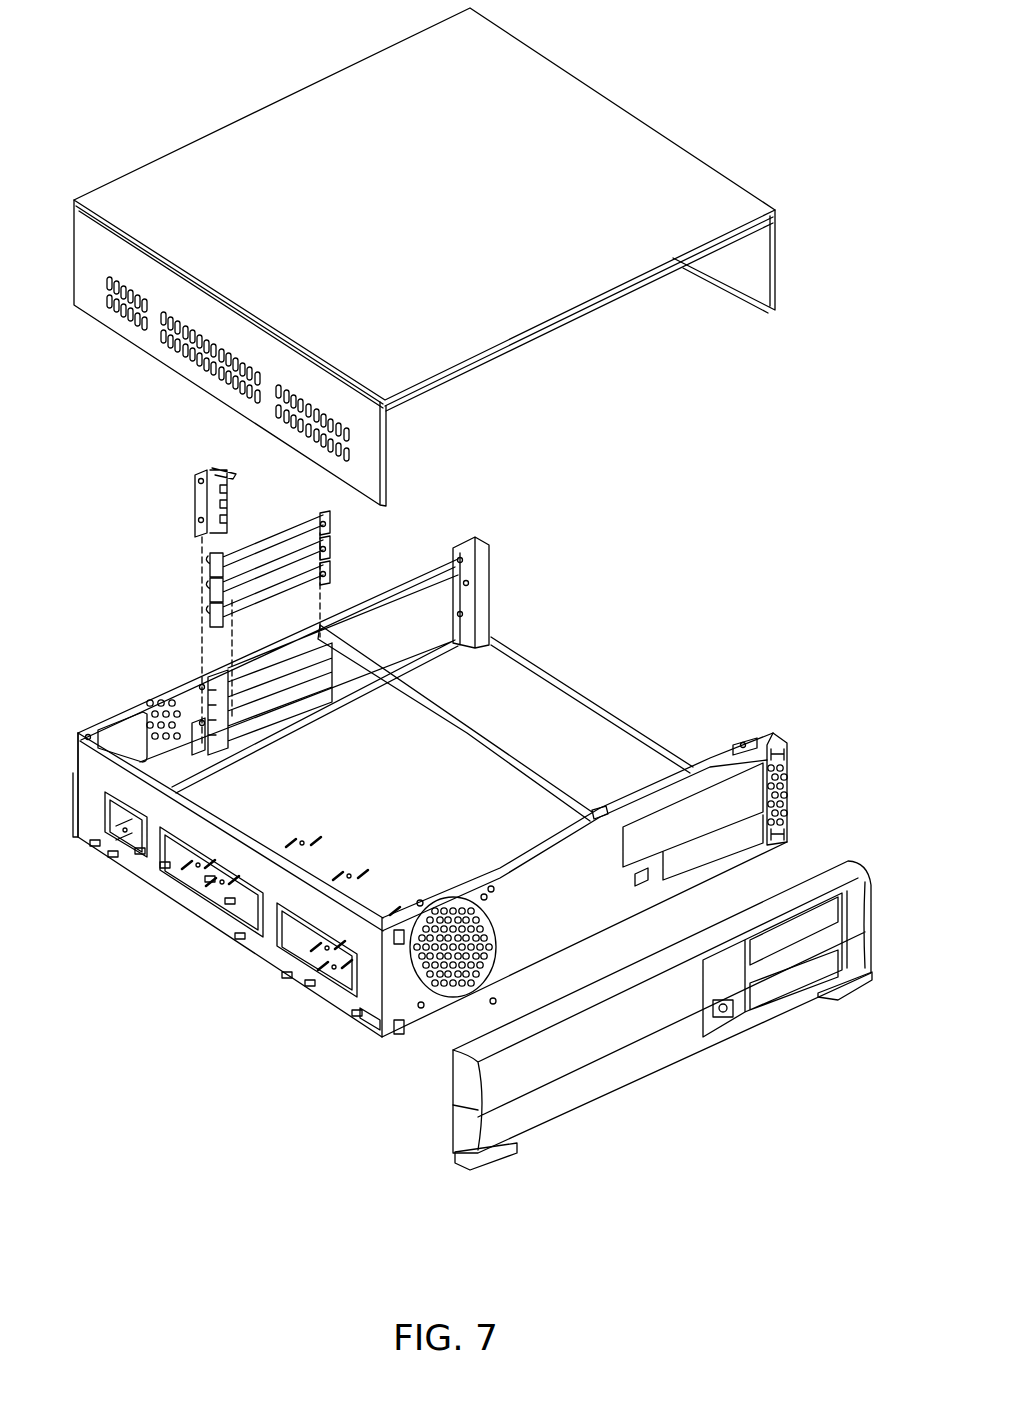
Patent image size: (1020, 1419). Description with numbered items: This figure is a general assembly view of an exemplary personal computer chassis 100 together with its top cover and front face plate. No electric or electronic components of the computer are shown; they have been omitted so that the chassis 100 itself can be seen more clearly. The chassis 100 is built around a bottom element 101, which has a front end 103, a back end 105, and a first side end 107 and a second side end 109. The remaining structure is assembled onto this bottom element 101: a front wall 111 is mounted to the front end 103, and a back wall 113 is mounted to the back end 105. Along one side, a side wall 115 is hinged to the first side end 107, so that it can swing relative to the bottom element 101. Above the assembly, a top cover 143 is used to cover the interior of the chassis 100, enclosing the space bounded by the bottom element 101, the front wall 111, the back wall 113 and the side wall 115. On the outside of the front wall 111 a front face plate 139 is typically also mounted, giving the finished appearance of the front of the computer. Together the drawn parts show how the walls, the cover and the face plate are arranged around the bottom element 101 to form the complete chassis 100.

The personal computer chassis 100 is at (691, 604).
The bottom element 101 is at (570, 718).
The front end 103 is at (432, 1015).
The back end 105 is at (440, 660).
The first side end 107 is at (209, 941).
The second side end 109 is at (640, 742).
The front wall 111 is at (579, 934).
The back wall 113 is at (465, 608).
The side wall 115 is at (228, 847).
The front face plate 139 is at (617, 1070).
The top cover 143 is at (603, 133).